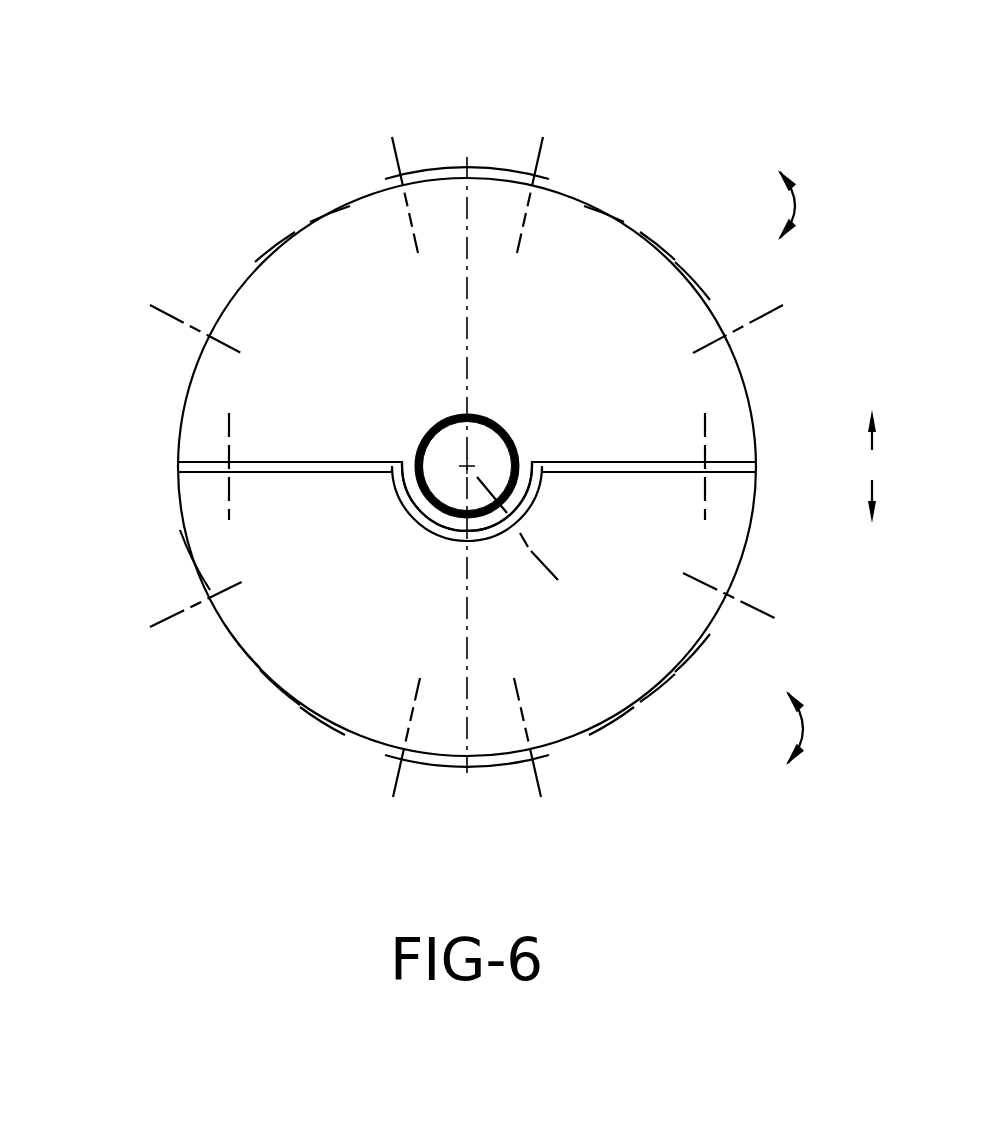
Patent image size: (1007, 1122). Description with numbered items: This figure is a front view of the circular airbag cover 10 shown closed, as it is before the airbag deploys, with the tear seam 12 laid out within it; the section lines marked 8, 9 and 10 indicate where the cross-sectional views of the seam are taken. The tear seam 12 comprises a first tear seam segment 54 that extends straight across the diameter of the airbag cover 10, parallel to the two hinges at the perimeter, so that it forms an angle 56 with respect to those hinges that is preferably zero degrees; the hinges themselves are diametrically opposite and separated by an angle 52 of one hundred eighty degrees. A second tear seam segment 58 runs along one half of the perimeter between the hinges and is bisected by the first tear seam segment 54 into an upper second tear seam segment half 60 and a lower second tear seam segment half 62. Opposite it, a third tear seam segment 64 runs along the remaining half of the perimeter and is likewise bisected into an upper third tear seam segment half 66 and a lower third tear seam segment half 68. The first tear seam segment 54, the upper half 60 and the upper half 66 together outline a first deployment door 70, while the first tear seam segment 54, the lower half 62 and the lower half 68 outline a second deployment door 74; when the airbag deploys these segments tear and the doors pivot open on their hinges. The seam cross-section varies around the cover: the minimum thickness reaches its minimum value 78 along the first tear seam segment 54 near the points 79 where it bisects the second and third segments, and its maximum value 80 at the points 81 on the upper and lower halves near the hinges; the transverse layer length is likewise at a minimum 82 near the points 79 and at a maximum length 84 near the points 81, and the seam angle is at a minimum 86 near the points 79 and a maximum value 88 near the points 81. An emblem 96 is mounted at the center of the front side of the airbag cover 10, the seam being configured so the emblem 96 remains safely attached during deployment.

The section line 8- 8 is at (467, 497).
The section line 9- 9 is at (468, 466).
The airbag cover 10 is at (673, 893).
The tear seam 12 is at (190, 358).
The angle 52 is at (467, 465).
The first tear seam segment 54 is at (351, 461).
The angle 56 is at (795, 207).
The second tear seam segment 58 is at (658, 245).
The upper second tear seam segment half 60 is at (693, 284).
The lower second tear seam segment half 62 is at (693, 648).
The third tear seam segment 64 is at (194, 561).
The upper third tear seam segment half 66 is at (275, 250).
The lower third tear seam segment half 68 is at (243, 649).
The first deployment door 70 is at (350, 237).
The second deployment door 74 is at (353, 697).
The minimum value 78 is at (461, 467).
The point 79 is at (461, 467).
The maximum value 80 is at (462, 469).
The point 81 is at (462, 469).
The minimum 82 is at (461, 467).
The maximum length 84 is at (462, 469).
The minimum 86 is at (177, 462).
The maximum value 88 is at (402, 185).
The emblem 96 is at (490, 418).